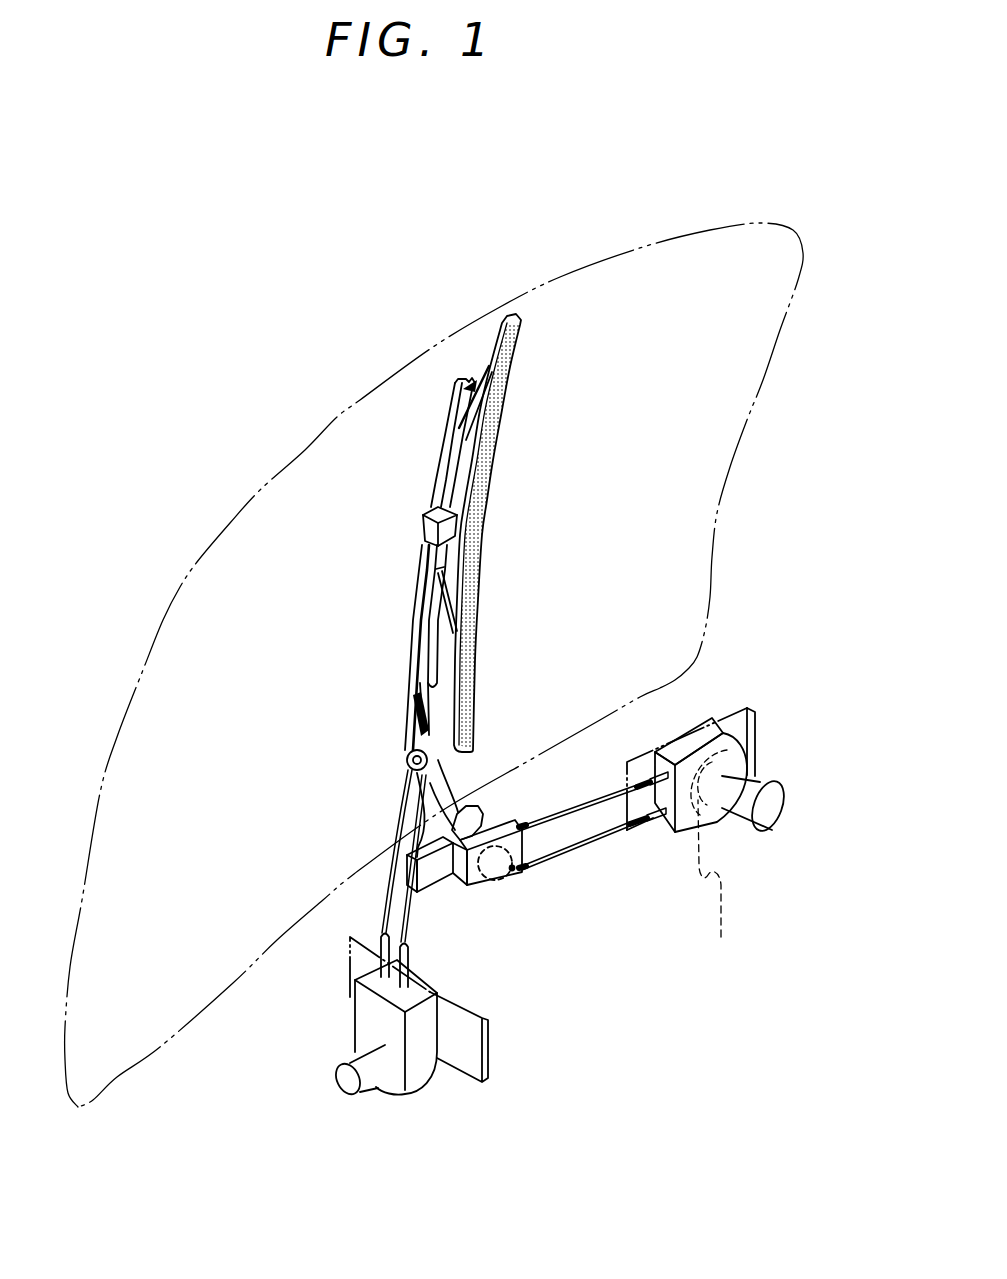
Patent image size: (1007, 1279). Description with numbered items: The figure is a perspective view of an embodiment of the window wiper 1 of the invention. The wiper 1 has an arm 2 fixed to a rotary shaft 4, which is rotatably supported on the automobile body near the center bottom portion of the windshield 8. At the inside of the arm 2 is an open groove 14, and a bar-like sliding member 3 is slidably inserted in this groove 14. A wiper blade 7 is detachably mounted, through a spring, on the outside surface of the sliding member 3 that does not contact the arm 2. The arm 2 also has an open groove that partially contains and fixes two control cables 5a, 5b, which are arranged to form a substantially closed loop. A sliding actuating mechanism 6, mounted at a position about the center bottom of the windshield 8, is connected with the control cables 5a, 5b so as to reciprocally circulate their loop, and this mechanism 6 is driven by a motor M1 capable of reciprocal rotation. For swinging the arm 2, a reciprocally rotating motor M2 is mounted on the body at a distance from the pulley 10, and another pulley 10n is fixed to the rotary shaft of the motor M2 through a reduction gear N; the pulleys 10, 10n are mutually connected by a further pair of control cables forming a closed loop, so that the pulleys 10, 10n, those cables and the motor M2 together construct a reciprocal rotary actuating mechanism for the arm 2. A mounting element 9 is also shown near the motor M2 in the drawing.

The wiper 1 is at (622, 1043).
The arm 2 is at (414, 624).
The sliding member 3 is at (455, 385).
The rotary shaft 4 is at (430, 866).
The control cable 5a is at (410, 910).
The control cable 5b is at (410, 947).
The sliding actuating mechanism 6 is at (420, 1063).
The wiper blade 7 is at (508, 397).
The windshield 8 is at (237, 542).
The mounting plate 9 is at (744, 724).
The pulley 10 is at (500, 893).
The pulley 10n is at (732, 862).
The open groove 14 is at (430, 503).
The motor M1 is at (365, 1077).
The reciprocally rotating motor M2 is at (752, 812).
The reduction gear N is at (727, 812).